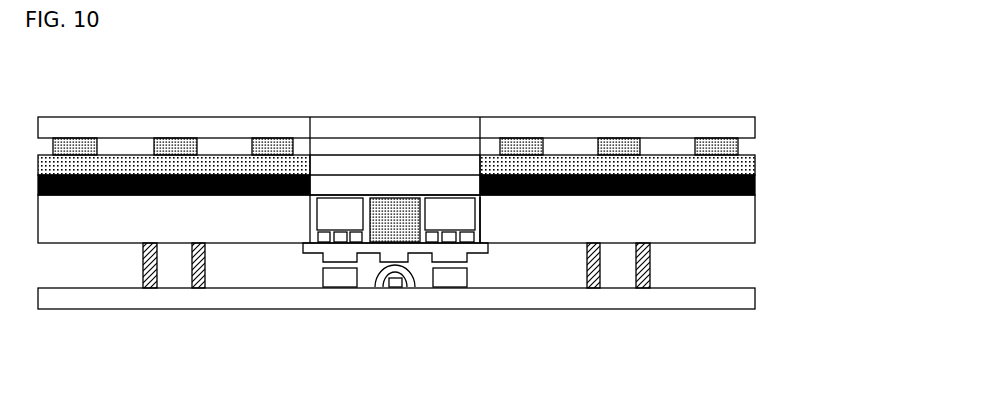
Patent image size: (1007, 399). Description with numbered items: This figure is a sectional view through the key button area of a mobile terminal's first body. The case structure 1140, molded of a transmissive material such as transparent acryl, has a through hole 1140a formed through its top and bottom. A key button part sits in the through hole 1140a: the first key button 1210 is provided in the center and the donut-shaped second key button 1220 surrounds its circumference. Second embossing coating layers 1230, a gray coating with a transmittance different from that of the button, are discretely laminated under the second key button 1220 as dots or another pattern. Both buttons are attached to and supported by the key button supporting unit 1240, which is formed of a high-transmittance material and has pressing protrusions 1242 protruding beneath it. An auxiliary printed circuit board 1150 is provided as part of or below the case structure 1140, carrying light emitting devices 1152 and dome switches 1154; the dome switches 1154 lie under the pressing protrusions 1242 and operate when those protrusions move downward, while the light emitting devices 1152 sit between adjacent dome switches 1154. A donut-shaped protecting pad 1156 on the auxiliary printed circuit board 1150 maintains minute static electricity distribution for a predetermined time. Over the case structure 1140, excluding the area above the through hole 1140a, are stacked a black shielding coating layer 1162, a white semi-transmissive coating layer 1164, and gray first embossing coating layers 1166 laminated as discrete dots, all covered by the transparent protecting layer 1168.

The protecting layer 1168 is at (755, 128).
The first embossing coating layers 1166 is at (738, 147).
The semi-transmissive coating layer 1164 is at (755, 170).
The shielding coating layer 1162 is at (755, 188).
The case structure 1140 is at (740, 228).
The through hole 1140a is at (482, 218).
The second key button 1220 is at (342, 208).
The first key button 1210 is at (397, 200).
The key button supporting unit 1240 is at (478, 247).
The second embossing coating layers 1230 is at (358, 238).
The pressing protrusions 1242 is at (310, 258).
The light emitting devices 1152 is at (340, 280).
The dome switches 1154 is at (415, 290).
The protecting pad 1156 is at (150, 280).
The auxiliary printed circuit board 1150 is at (755, 298).